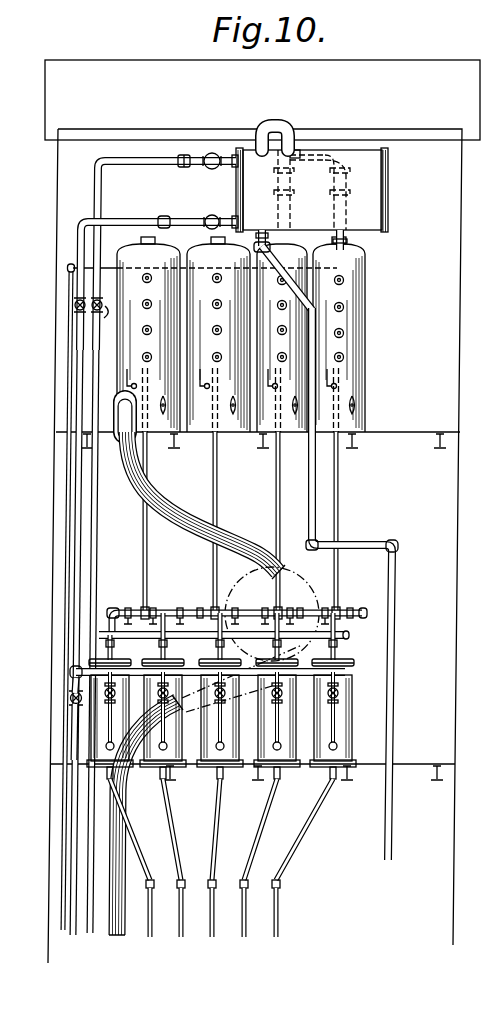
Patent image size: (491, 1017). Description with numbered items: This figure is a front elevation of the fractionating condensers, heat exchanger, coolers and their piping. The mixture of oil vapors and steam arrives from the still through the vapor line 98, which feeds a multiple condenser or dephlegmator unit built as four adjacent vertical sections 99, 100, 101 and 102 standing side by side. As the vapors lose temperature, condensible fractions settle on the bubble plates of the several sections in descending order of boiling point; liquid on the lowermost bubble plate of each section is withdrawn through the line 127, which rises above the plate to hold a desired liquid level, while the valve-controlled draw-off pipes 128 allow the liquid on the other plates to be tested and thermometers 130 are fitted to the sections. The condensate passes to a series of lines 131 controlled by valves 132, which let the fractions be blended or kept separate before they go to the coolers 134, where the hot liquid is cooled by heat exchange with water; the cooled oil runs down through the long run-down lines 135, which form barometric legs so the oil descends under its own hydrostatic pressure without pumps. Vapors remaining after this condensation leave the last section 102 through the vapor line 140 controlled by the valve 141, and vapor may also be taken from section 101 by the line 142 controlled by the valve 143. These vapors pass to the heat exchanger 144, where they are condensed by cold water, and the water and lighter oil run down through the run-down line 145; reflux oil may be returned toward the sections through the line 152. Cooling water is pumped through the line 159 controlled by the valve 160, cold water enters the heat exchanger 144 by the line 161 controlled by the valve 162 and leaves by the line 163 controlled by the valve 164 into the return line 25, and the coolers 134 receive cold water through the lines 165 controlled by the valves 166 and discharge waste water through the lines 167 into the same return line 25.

The return line 25 is at (91, 937).
The vapor line 98 is at (137, 497).
The condensing unit section 99 is at (148, 334).
The condensing unit section 100 is at (218, 334).
The condensing unit section 101 is at (282, 338).
The condensing unit section 102 is at (339, 334).
The draw-off line 127 is at (282, 490).
The draw-off pipes 128 is at (142, 282).
The thermometers 130 is at (133, 385).
The lines 131 is at (200, 610).
The valves 132 is at (364, 610).
The coolers 134 is at (200, 766).
The run-down lines 135 is at (150, 938).
The vapor line 140 is at (333, 199).
The valve 141 is at (348, 194).
The line 142 is at (278, 232).
The valve 143 is at (286, 190).
The heat exchanger 144 is at (395, 163).
The run-down line 145 is at (316, 476).
The line 152 is at (68, 592).
The line 159 is at (78, 528).
The valve 160 is at (69, 698).
The line 161 is at (79, 248).
The valve 162 is at (74, 306).
The line 163 is at (100, 189).
The valve 164 is at (104, 318).
The lines 165 is at (336, 720).
The valves 166 is at (339, 693).
The lines 167 is at (113, 650).